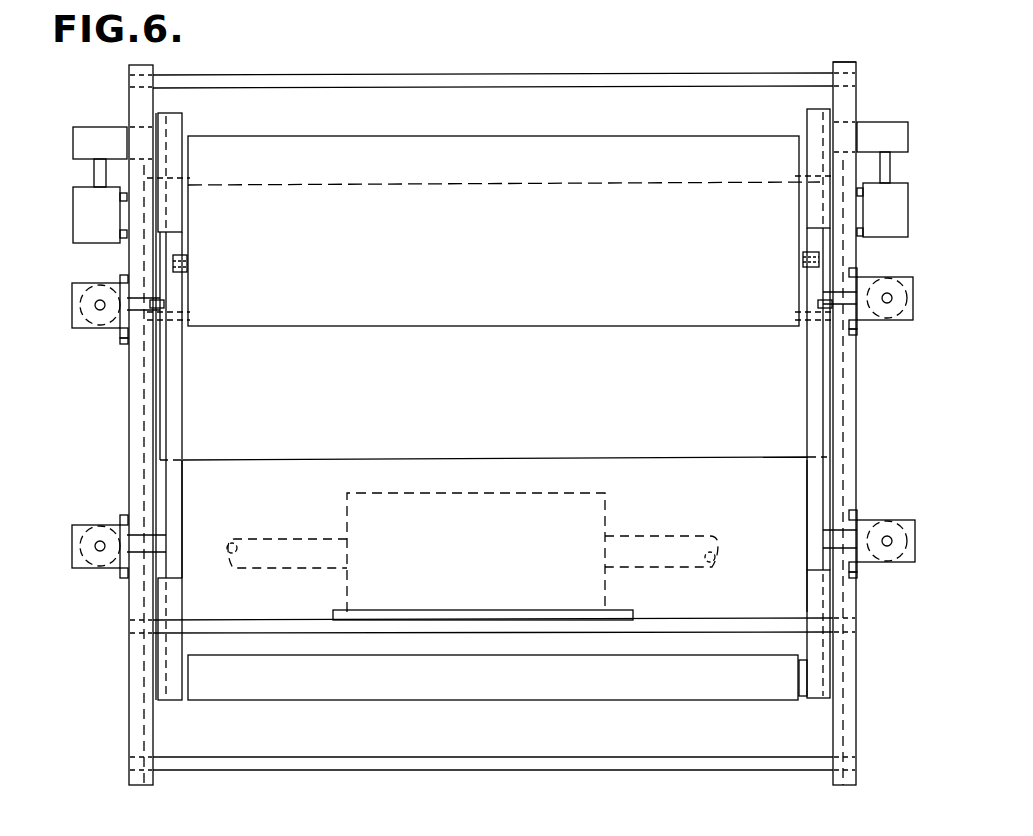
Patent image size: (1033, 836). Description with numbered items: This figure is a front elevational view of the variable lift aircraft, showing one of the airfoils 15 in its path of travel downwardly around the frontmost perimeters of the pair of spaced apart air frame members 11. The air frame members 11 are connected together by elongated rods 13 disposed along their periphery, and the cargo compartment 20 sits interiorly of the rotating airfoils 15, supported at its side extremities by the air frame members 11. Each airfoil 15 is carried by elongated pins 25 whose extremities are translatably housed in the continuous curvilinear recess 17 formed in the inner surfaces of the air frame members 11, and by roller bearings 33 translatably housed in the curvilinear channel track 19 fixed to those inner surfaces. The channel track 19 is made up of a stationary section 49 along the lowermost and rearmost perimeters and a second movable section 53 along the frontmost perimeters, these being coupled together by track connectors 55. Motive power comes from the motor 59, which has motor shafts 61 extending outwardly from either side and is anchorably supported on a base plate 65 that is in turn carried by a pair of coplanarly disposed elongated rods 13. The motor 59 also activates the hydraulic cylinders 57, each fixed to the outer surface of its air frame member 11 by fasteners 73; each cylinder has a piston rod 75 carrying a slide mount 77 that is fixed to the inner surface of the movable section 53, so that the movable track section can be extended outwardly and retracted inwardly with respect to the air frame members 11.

The air frame member 11 is at (850, 100).
The elongated rod 13 is at (581, 75).
The airfoil 15 is at (520, 137).
The curvilinear recess 17 is at (140, 400).
The curvilinear channel track 19 is at (185, 427).
The cargo compartment 20 is at (565, 185).
The elongated pin 25 is at (189, 188).
The roller bearing 33 is at (186, 258).
The stationary section 49 is at (790, 645).
The second movable section 53 is at (182, 488).
The track connector 55 is at (180, 150).
The hydraulic cylinder 57 is at (80, 216).
The motor 59 is at (347, 590).
The motor shaft 61 is at (235, 575).
The base plate 65 is at (430, 615).
The fastener 73 is at (120, 341).
The piston rod 75 is at (92, 173).
The slide mount 77 is at (81, 132).